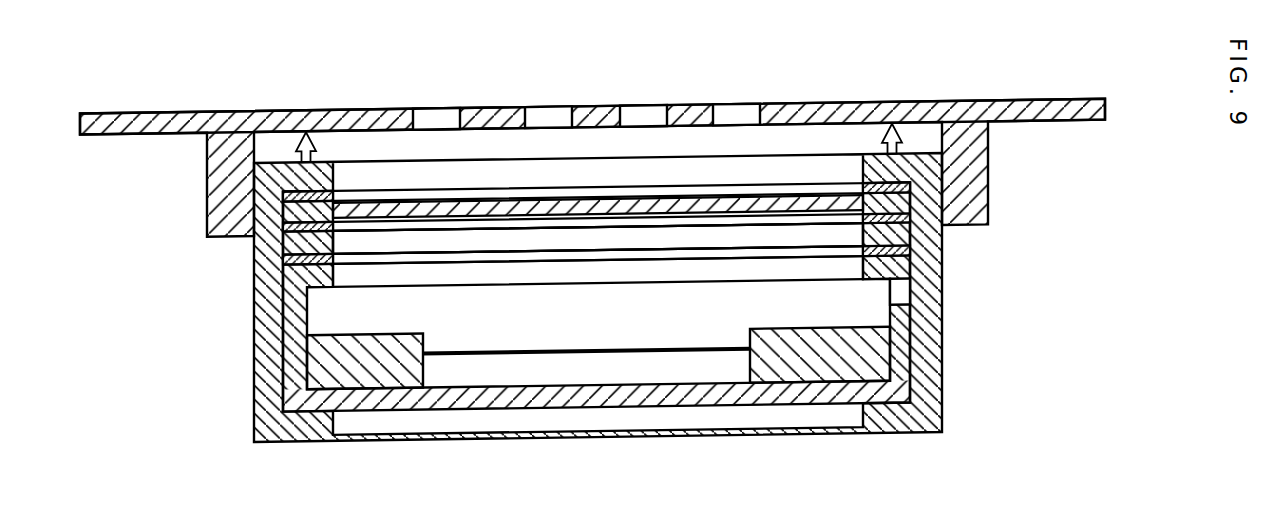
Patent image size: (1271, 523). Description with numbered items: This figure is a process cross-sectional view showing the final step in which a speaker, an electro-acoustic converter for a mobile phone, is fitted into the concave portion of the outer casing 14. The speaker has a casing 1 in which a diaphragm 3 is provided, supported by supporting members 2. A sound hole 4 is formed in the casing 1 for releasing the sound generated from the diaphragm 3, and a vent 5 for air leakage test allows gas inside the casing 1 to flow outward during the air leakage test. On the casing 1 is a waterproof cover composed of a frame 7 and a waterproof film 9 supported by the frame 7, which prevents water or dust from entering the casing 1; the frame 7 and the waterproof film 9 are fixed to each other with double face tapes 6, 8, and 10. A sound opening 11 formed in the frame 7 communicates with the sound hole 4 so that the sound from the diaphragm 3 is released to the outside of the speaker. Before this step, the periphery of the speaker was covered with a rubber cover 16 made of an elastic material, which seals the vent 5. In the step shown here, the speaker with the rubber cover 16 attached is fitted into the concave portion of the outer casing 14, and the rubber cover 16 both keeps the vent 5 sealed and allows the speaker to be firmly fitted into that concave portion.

The casing 1 is at (912, 342).
The supporting members 2 is at (818, 373).
The diaphragm 3 is at (665, 350).
The sound hole 4 is at (395, 275).
The vent for air leakage test 5 is at (902, 293).
The double face tape 6 is at (913, 250).
The frame 7 is at (913, 237).
The double face tape 8 is at (912, 219).
The waterproof film 9 is at (912, 204).
The double face tape 10 is at (903, 182).
The sound opening 11 is at (440, 238).
The outer casing 14 is at (882, 102).
The rubber cover 16 is at (253, 352).